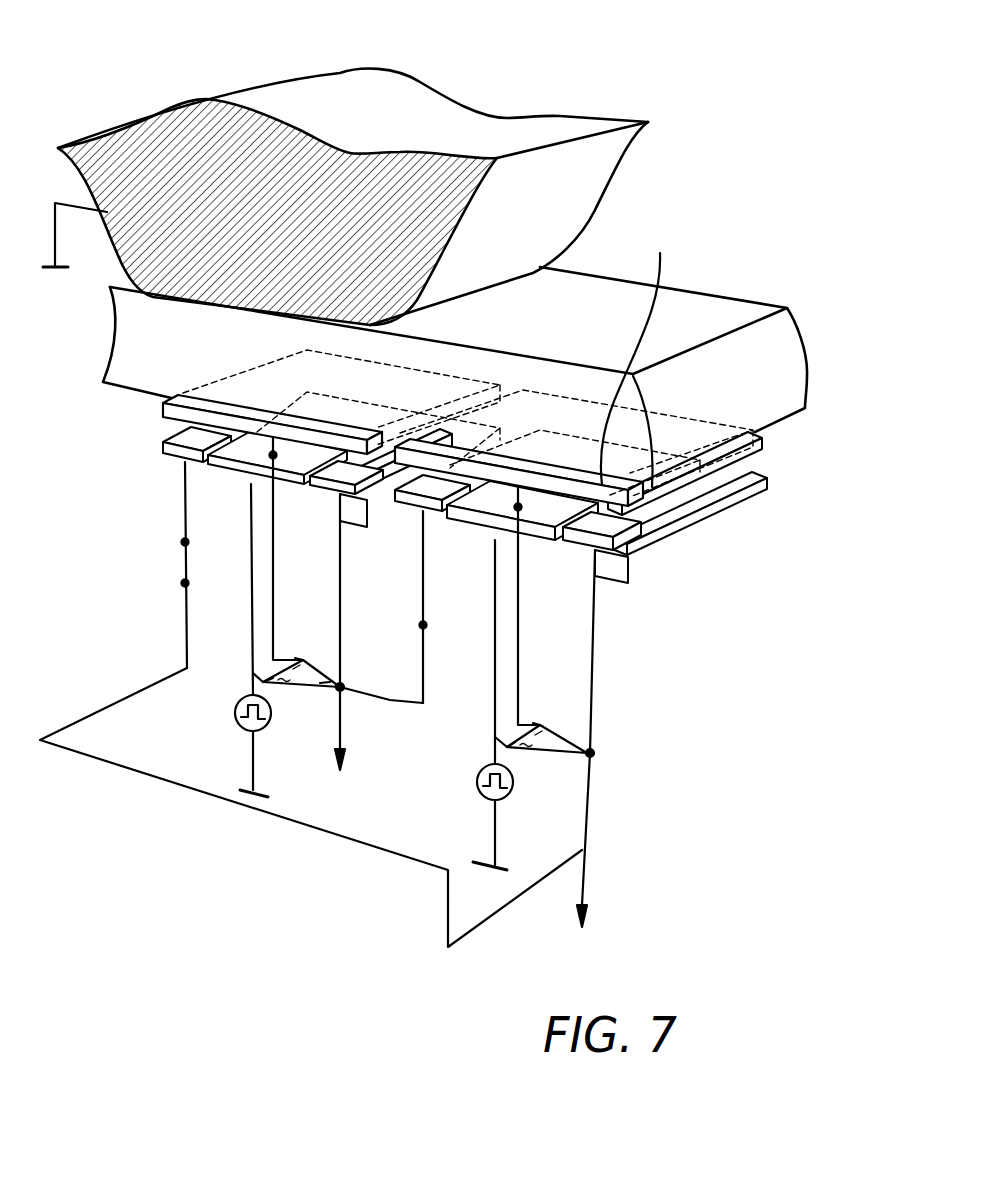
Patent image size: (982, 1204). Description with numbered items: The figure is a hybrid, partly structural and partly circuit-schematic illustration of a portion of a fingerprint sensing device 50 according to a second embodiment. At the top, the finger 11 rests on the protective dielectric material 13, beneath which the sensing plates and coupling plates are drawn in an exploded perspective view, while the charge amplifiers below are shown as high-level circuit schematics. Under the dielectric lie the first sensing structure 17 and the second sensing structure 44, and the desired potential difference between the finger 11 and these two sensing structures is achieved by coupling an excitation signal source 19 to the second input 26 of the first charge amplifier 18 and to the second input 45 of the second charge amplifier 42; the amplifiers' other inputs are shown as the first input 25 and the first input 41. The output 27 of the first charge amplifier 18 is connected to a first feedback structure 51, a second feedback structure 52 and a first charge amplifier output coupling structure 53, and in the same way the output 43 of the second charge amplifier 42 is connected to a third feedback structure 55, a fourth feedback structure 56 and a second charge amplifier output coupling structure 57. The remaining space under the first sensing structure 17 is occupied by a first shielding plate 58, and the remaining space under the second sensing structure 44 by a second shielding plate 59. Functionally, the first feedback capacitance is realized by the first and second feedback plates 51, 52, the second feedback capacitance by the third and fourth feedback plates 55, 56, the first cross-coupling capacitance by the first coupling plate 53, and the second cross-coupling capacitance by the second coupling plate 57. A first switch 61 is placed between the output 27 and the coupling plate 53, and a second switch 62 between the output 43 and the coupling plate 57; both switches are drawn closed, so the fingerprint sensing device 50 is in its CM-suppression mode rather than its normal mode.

The finger 11 is at (203, 132).
The protective dielectric material 13 is at (750, 347).
The first sensing structure 17 is at (637, 354).
The first charge amplifier 18 is at (546, 772).
The excitation signal source 19 is at (238, 723).
The first input of the first charge amplifier 25 is at (533, 723).
The second input of the first charge amplifier 26 is at (515, 742).
The output of the first charge amplifier 27 is at (590, 753).
The first input of the second charge amplifier 41 is at (295, 658).
The second charge amplifier 42 is at (300, 700).
The output of the second charge amplifier 43 is at (325, 683).
The second sensing structure 44 is at (163, 410).
The second input of the second charge amplifier 45 is at (273, 678).
The fingerprint sensing device 50 is at (752, 130).
The first feedback structure 51 is at (580, 538).
The second feedback structure 52 is at (663, 530).
The first charge amplifier output coupling structure 53 is at (163, 450).
The third feedback structure 55 is at (327, 488).
The fourth feedback structure 56 is at (373, 487).
The second charge amplifier output coupling structure 57 is at (410, 512).
The first shielding plate 58 is at (482, 518).
The second shielding plate 59 is at (233, 467).
The first switch 61 is at (168, 570).
The second switch 62 is at (435, 636).